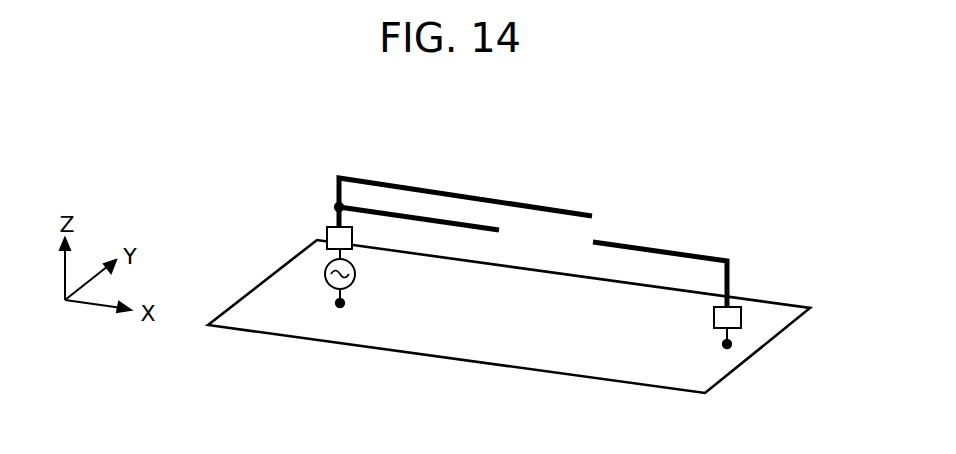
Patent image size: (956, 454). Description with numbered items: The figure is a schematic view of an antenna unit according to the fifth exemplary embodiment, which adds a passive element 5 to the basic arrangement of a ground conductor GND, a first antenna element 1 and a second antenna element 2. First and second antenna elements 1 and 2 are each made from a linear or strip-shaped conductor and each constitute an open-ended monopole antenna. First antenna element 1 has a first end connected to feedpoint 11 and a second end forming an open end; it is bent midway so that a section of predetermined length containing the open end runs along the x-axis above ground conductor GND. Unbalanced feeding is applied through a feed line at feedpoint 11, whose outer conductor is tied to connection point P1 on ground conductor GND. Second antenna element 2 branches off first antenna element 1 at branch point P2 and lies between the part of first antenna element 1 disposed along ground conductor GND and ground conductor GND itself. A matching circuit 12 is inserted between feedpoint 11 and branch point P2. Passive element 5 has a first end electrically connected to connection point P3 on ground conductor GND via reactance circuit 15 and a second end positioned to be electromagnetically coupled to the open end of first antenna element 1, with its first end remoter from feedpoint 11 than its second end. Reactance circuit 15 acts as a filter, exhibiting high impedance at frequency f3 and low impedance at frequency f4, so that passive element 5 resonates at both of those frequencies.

The first antenna element 1 is at (363, 178).
The second antenna element 2 is at (473, 227).
The passive element 5 is at (713, 260).
The feedpoint 11 is at (325, 274).
The matching circuit 12 is at (326, 234).
The reactance circuit 15 is at (732, 307).
The connection point P1 is at (340, 309).
The branch point P2 is at (335, 206).
The connection point P3 is at (727, 349).
The ground conductor GND is at (637, 368).